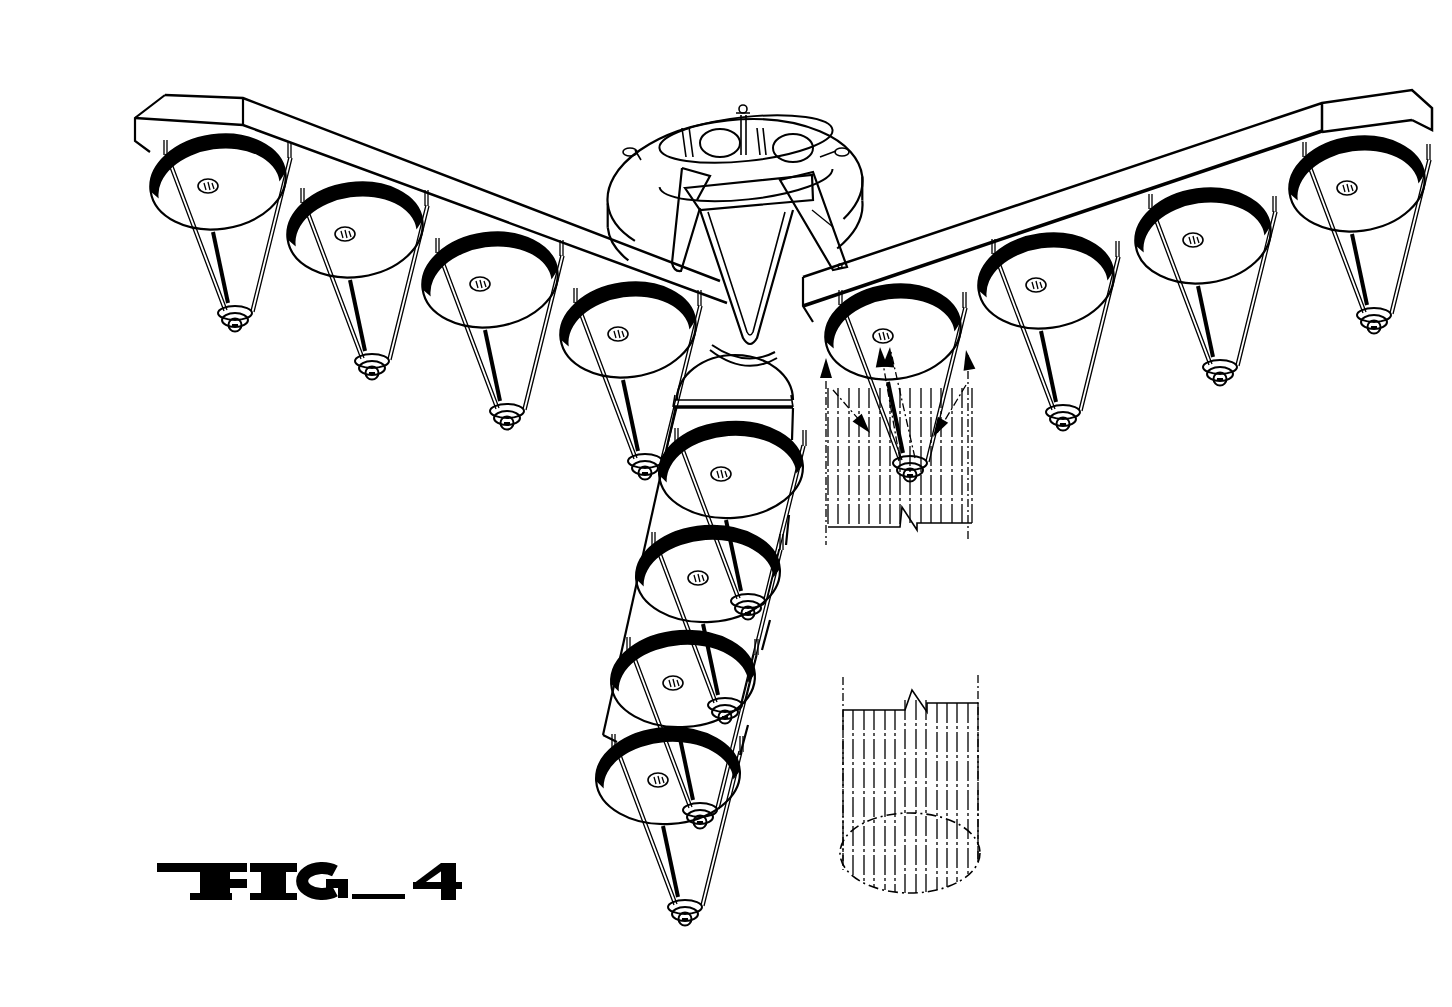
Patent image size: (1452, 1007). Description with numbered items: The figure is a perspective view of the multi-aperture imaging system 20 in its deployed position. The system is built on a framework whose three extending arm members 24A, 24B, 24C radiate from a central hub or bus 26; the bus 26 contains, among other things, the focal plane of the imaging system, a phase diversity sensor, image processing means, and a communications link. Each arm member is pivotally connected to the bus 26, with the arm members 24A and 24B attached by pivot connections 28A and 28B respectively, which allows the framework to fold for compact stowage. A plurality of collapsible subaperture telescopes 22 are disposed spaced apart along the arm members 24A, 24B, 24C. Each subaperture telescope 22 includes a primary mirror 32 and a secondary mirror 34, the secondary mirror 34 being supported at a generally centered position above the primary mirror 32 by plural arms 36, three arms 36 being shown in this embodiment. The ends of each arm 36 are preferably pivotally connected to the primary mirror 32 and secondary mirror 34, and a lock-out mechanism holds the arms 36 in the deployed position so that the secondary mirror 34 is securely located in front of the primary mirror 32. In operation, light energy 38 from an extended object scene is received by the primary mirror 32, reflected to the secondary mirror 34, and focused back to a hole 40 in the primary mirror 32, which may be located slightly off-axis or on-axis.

The multi-aperture imaging system 20 is at (562, 523).
The subaperture telescope 22 is at (787, 526).
The arm member 24A is at (948, 240).
The arm member 24B is at (393, 168).
The arm member 24C is at (612, 664).
The hub or bus 26 is at (759, 247).
The pivot connection 28A is at (852, 225).
The pivot connection 28B is at (667, 183).
The primary mirror 32 is at (906, 327).
The secondary mirror 34 is at (1060, 428).
The arm 36 is at (1085, 398).
The light energy 38 is at (934, 525).
The hole 40 is at (1337, 300).